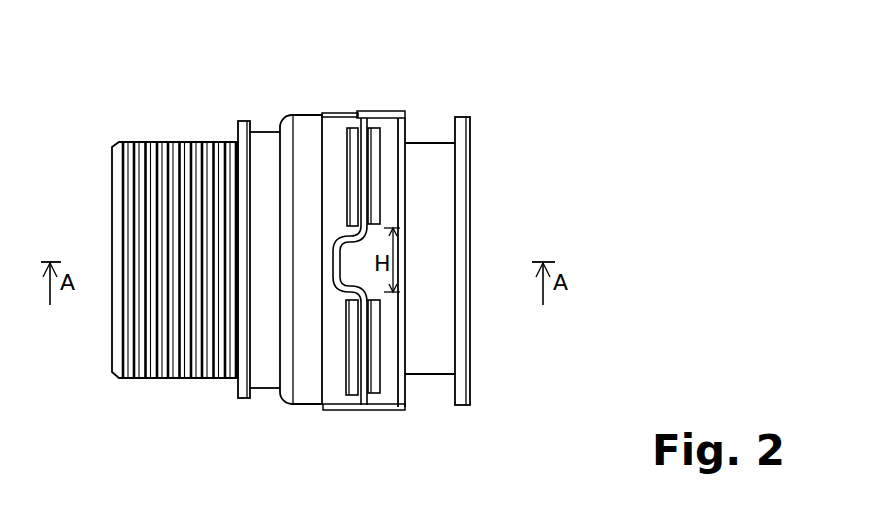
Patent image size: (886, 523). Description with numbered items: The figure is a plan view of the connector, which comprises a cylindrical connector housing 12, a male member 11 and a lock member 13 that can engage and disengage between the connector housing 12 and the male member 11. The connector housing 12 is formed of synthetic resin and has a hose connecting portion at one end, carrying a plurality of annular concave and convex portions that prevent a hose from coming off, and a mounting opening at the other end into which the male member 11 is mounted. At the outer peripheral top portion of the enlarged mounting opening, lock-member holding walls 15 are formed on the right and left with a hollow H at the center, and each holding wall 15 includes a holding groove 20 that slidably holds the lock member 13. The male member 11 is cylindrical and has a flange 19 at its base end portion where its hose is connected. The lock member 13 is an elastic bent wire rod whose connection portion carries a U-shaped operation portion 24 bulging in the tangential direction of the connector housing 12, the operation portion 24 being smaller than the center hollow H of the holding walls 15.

The male member 11 is at (453, 106).
The connector housing 12 is at (211, 125).
The lock member 13 is at (357, 326).
The lock-member holding walls 15 is at (382, 150).
The flange 19 is at (463, 131).
The holding groove 20 is at (364, 128).
The operation portion 24 is at (334, 248).